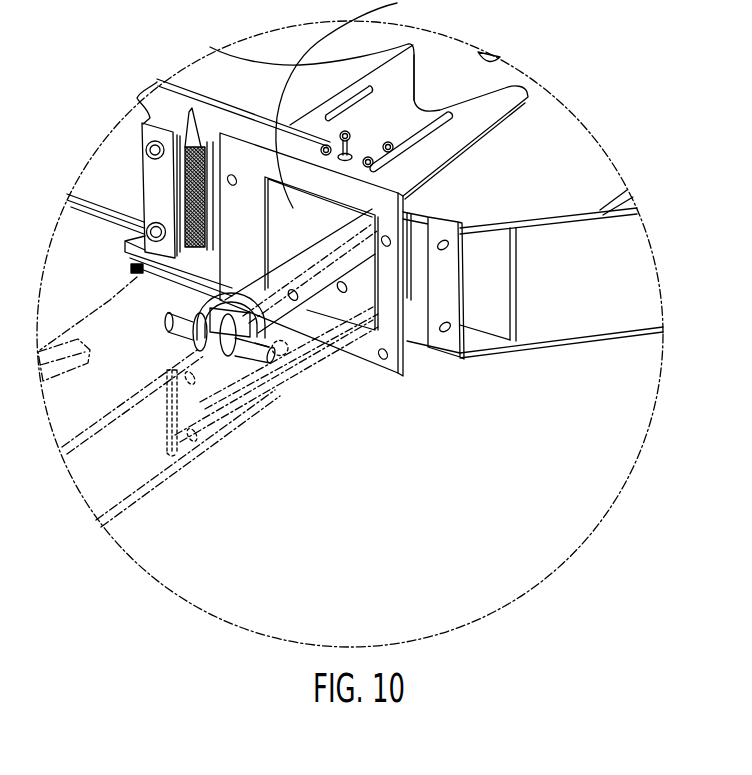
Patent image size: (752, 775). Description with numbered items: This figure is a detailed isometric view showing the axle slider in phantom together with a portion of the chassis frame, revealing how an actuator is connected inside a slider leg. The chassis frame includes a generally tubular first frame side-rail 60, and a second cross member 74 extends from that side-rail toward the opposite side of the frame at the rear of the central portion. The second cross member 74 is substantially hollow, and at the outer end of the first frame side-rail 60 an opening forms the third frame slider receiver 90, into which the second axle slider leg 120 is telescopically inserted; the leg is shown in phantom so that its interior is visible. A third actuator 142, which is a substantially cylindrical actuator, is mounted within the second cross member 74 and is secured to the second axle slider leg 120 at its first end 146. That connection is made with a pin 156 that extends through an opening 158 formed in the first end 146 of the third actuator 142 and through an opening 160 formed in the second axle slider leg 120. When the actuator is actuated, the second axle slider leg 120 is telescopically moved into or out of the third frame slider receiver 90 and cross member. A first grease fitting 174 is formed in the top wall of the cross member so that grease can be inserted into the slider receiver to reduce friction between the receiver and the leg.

The first frame side-rail 60 is at (223, 75).
The second cross member 74 is at (508, 80).
The third frame slider receiver 90 is at (349, 104).
The second axle slider leg 120 is at (92, 392).
The third actuator 142 is at (318, 282).
The first end 146 is at (212, 358).
The pin 156 is at (276, 360).
The opening 158 is at (243, 356).
The opening 160 is at (277, 355).
The first grease fitting 174 is at (414, 50).